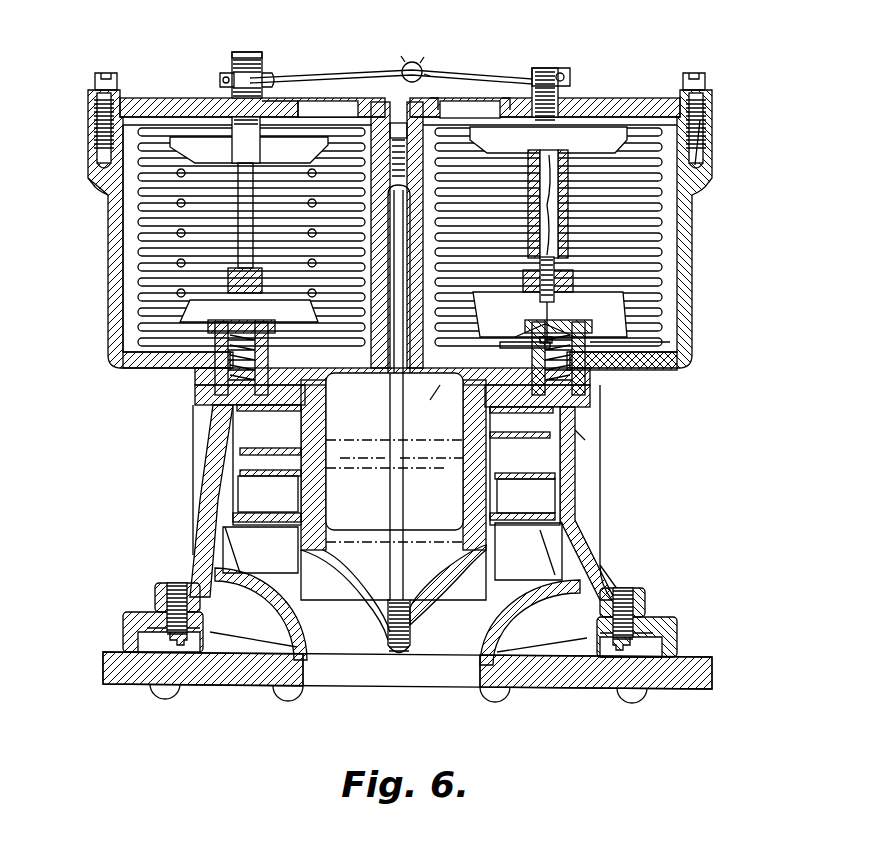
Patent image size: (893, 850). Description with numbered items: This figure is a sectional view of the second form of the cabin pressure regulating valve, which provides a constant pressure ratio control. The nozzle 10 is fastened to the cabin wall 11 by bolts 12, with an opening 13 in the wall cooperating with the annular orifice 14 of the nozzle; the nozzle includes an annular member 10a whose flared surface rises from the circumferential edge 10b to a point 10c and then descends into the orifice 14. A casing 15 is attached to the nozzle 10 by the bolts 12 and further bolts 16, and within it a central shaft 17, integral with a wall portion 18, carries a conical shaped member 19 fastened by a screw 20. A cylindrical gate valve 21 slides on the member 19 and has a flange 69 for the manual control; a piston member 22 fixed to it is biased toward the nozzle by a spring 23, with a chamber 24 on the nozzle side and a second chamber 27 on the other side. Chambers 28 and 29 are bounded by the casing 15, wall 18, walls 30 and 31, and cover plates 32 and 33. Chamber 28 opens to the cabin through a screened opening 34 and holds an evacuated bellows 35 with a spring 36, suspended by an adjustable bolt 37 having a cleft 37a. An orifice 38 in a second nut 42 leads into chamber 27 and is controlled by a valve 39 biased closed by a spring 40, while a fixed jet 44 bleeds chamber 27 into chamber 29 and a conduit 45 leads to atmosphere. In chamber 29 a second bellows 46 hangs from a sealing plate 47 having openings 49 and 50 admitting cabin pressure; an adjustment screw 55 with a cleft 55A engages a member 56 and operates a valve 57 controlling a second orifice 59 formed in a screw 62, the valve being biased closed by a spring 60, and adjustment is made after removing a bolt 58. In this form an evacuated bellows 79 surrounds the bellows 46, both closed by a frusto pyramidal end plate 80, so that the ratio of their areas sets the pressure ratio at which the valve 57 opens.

The nozzle 10 is at (300, 638).
The annular member 10a is at (270, 578).
The circumferential edge 10b is at (625, 600).
The point 10c is at (565, 585).
The cabin wall 11 is at (600, 688).
The bolts 12 is at (288, 694).
The opening 13 is at (378, 682).
The orifice 14 is at (391, 670).
The casing 15 is at (116, 315).
The bolts 16 is at (173, 690).
The central shaft 17 is at (468, 503).
The wall portion 18 is at (394, 433).
The conical shaped member 19 is at (442, 568).
The screw 20 is at (388, 505).
The cylindrical gate valve 21 is at (300, 546).
The piston member 22 is at (530, 510).
The spring 23 is at (520, 475).
The chamber 24 is at (505, 590).
The second chamber 27 is at (242, 428).
The chamber 28 is at (128, 358).
The chamber 29 is at (680, 353).
The wall 30 is at (378, 105).
The wall 31 is at (440, 100).
The cover plate 32 is at (220, 118).
The cover plate 33 is at (630, 108).
The screened opening 34 is at (315, 102).
The evacuated bellows 35 is at (135, 242).
The spring 36 is at (135, 200).
The adjustable bolt 37 is at (247, 140).
The cleft 37a is at (250, 70).
The orifice 38 is at (249, 309).
The valve 39 is at (225, 385).
The spring 40 is at (214, 410).
The second nut 42 is at (208, 368).
The fixed jet 44 is at (523, 327).
The conduit 45 is at (430, 387).
The second bellows 46 is at (477, 102).
The sealing plate 47 is at (655, 125).
The opening 49 is at (548, 136).
The opening 50 is at (550, 229).
The adjustment screw 55 is at (565, 314).
The cleft 55A is at (548, 188).
The member 56 is at (542, 313).
The valve 57 is at (582, 370).
The bolt 58 is at (555, 80).
The second orifice 59 is at (558, 325).
The spring 60 is at (590, 425).
The screw 62 is at (650, 349).
The flange 69 is at (296, 462).
The evacuated bellows 79 is at (680, 258).
The frusto pyramidal end plate 80 is at (568, 292).